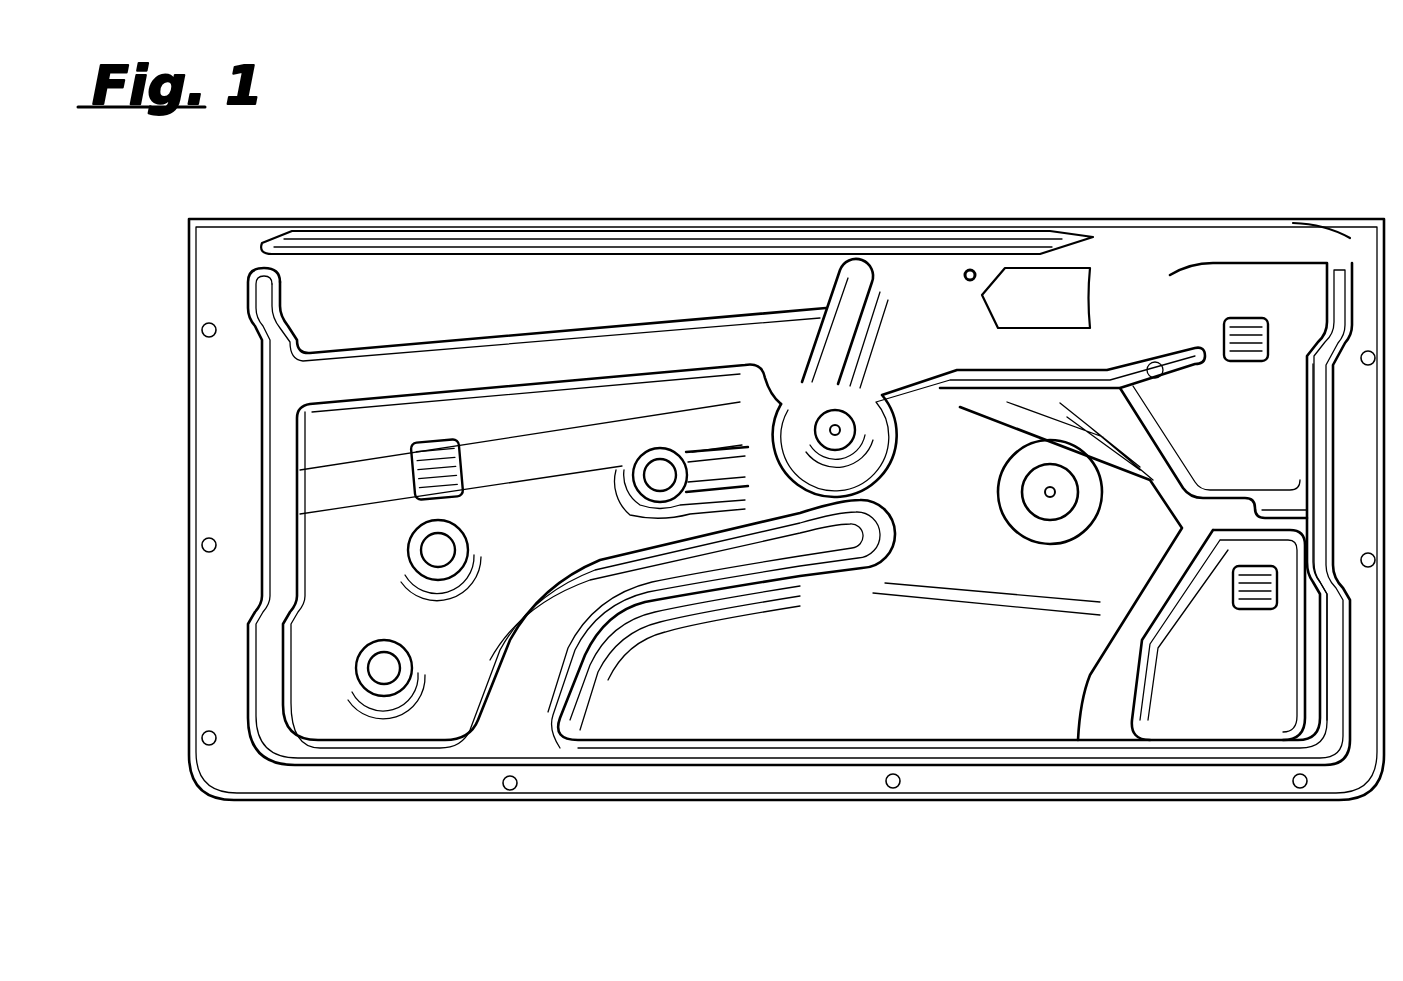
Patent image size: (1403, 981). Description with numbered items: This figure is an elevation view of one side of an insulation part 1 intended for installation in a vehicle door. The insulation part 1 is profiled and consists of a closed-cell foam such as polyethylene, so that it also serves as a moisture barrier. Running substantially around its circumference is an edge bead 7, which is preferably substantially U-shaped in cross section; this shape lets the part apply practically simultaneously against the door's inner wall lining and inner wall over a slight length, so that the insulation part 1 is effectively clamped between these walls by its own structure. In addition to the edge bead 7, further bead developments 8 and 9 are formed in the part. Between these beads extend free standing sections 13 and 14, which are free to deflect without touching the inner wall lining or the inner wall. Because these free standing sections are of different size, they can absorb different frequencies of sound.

The insulation part 1 is at (243, 770).
The edge bead 7 is at (577, 360).
The bead development 8 is at (1142, 598).
The bead development 9 is at (753, 450).
The free standing section 13 is at (1213, 680).
The free standing section 14 is at (510, 462).